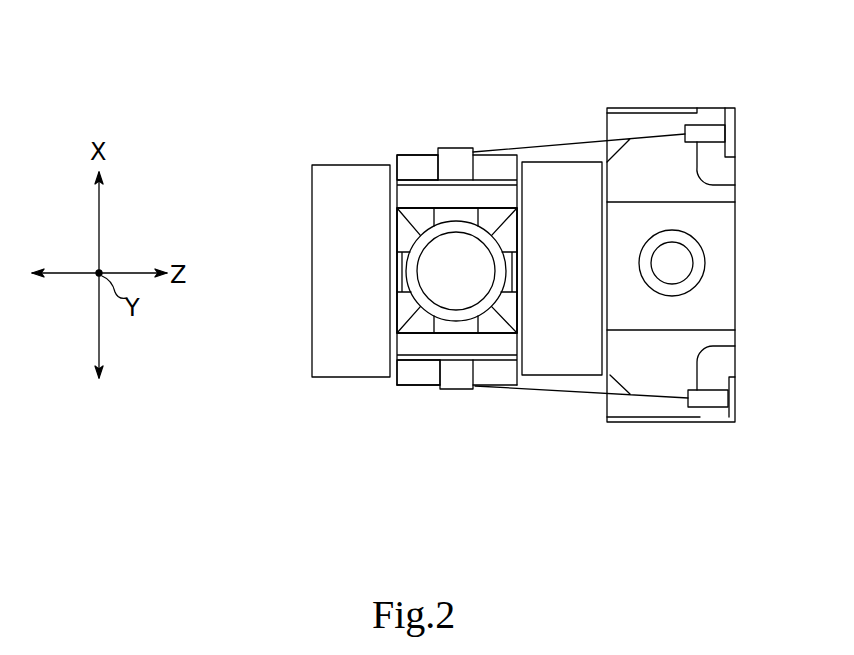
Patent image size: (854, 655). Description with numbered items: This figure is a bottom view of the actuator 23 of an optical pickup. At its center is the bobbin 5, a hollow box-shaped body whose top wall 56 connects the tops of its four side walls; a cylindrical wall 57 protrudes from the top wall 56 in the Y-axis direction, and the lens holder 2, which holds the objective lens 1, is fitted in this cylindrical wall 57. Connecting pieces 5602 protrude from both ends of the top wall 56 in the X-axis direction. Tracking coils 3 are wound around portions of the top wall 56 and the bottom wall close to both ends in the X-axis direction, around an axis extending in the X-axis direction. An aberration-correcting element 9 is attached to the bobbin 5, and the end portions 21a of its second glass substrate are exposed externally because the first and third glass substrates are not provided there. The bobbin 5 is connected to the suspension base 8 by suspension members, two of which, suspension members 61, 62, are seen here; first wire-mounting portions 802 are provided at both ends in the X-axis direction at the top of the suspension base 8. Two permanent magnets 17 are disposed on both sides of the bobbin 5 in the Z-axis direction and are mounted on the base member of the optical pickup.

The objective lens 1 is at (440, 253).
The lens holder 2 is at (487, 233).
The tracking coils 3 is at (512, 197).
The bobbin 5 is at (413, 320).
The top wall 56 is at (413, 320).
The cylindrical wall 57 is at (402, 280).
The suspension base 8 is at (737, 242).
The aberration-correcting element 9 is at (425, 393).
The permanent magnets 17 is at (322, 220).
The end portions 21a is at (403, 158).
The actuator 23 is at (715, 218).
The suspension member 61 is at (568, 143).
The suspension member 62 is at (583, 393).
The first wire-mounting portions 802 is at (712, 135).
The connecting pieces 5602 is at (457, 148).